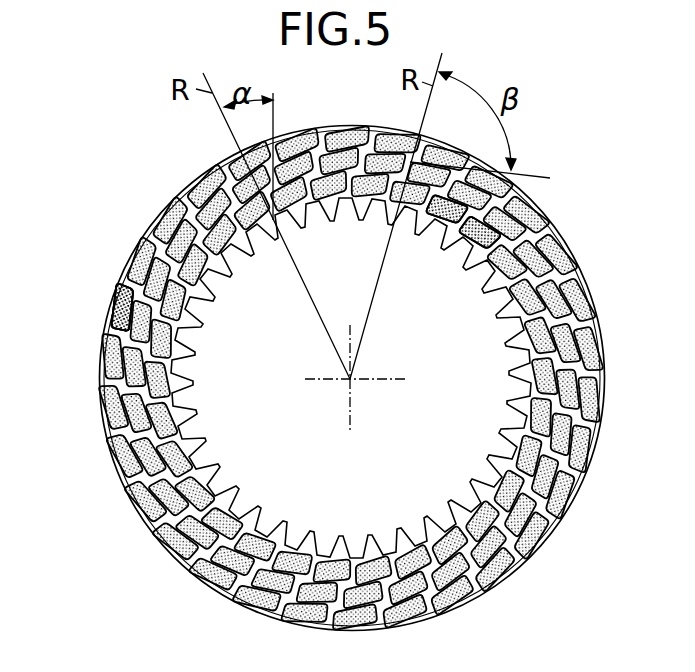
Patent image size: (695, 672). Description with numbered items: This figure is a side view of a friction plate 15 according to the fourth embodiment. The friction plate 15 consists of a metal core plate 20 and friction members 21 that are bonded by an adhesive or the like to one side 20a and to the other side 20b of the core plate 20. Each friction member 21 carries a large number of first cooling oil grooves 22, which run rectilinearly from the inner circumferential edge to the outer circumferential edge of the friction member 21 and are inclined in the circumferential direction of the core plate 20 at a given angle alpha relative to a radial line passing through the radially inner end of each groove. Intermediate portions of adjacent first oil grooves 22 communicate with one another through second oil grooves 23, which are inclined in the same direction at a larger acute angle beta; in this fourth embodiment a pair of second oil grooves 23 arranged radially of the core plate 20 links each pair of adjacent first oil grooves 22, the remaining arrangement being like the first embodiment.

The friction plate 15 is at (174, 171).
The core plate 20 is at (158, 233).
The one side of the core plate 20a is at (114, 311).
The other side of the core plate 20b is at (77, 328).
The friction member 21 is at (586, 282).
The first cooling oil groove 22 is at (128, 478).
The second oil groove 23 is at (490, 228).